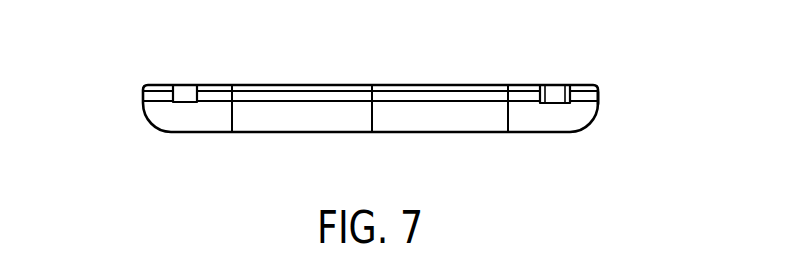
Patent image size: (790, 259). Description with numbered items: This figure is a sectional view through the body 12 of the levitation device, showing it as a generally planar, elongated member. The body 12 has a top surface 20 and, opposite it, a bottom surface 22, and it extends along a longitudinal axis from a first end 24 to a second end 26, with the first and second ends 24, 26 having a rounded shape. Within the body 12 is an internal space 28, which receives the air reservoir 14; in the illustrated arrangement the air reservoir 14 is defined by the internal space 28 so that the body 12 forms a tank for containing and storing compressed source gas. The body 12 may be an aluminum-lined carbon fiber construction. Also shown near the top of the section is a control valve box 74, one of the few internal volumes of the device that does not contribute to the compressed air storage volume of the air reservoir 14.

The body 12 is at (168, 133).
The air reservoir 14 is at (467, 116).
The top surface 20 is at (460, 87).
The bottom surface 22 is at (272, 123).
The first end 24 is at (142, 105).
The second end 26 is at (598, 103).
The internal space 28 is at (222, 118).
The control valve box 74 is at (555, 87).